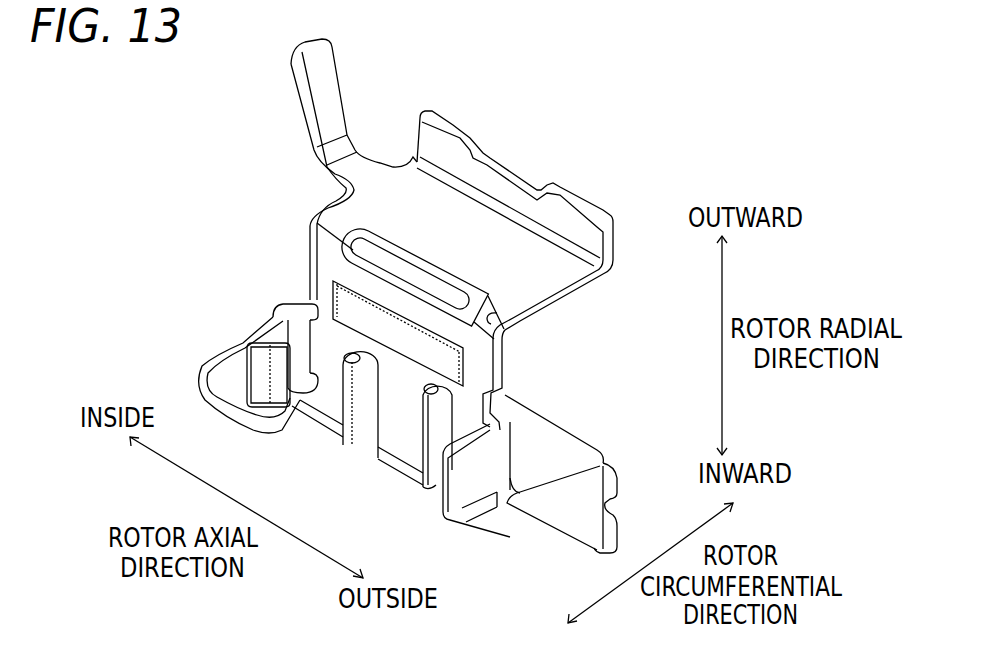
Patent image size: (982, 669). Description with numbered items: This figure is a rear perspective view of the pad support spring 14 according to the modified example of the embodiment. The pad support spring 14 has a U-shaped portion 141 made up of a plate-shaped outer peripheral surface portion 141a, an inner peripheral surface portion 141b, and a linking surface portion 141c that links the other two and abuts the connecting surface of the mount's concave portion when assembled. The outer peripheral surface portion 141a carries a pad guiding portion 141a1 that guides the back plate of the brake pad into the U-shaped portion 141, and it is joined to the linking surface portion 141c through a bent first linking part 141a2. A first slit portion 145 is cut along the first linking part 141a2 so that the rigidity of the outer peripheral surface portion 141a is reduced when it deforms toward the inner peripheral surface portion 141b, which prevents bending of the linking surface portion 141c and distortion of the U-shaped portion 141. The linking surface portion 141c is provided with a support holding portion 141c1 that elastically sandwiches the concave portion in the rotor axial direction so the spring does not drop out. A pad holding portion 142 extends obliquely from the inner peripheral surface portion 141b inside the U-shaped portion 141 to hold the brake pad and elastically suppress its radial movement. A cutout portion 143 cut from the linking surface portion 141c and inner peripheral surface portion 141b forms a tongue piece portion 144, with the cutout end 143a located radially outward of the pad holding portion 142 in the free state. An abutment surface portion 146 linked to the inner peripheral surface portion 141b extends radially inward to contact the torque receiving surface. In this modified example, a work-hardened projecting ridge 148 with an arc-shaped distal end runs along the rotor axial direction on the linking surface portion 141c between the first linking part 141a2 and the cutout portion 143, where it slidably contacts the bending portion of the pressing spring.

The pad support spring 14 is at (190, 108).
The U-shaped portion 141 is at (621, 284).
The outer peripheral surface portion 141a is at (558, 286).
The pad guiding portion 141a1 is at (330, 71).
The first linking part 141a2 is at (497, 322).
The inner peripheral surface portion 141b is at (604, 462).
The linking surface portion 141c is at (510, 370).
The support holding portion 141c1 is at (280, 310).
The pad holding portion 142 is at (246, 335).
The cutout portion 143 is at (337, 428).
The end of the cutout portion 143a is at (350, 358).
The tongue piece portion 144 is at (397, 420).
The first slit portion 145 is at (357, 246).
The abutment surface portion 146 is at (618, 521).
The projecting ridge 148 is at (310, 300).